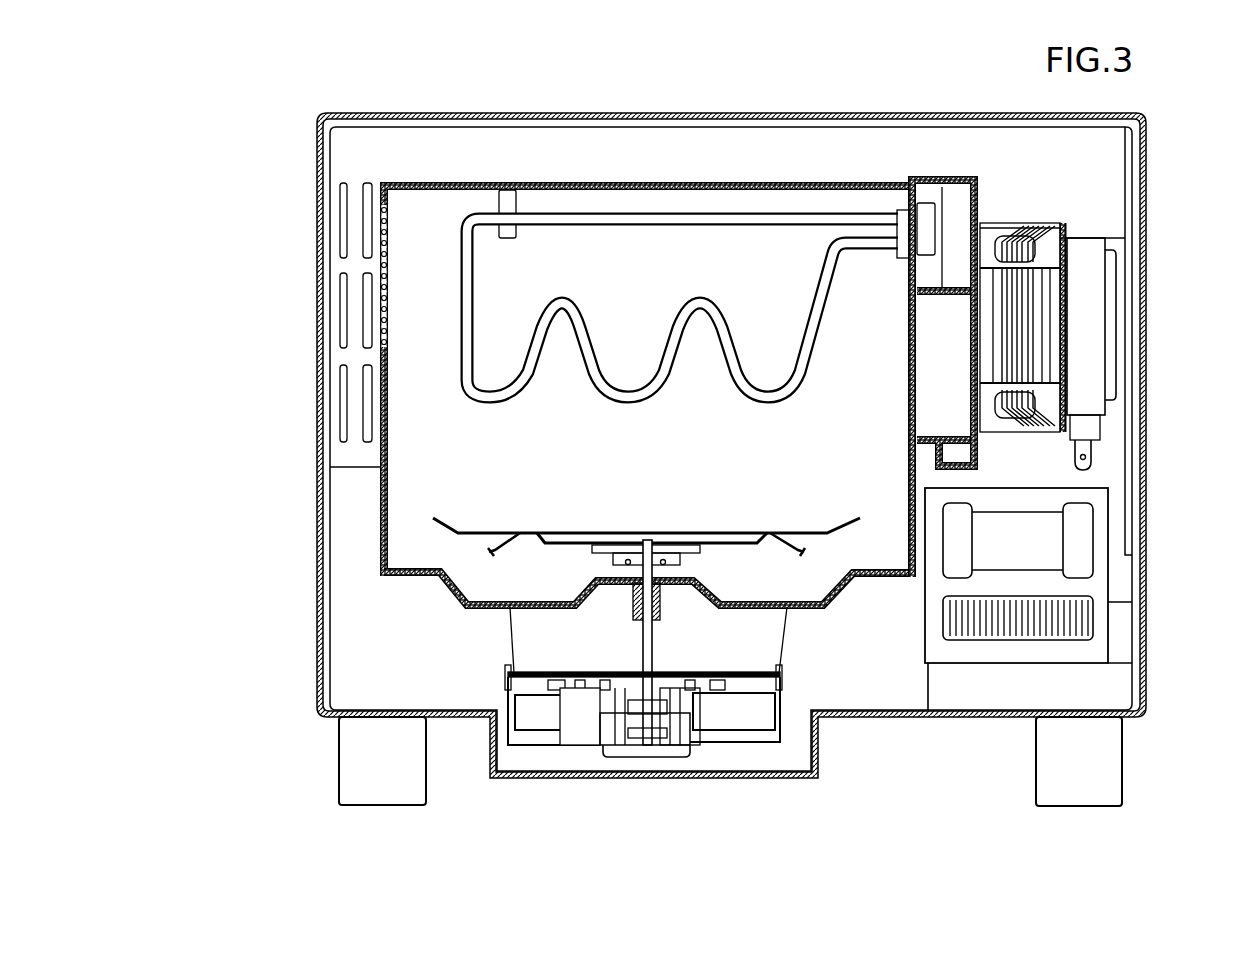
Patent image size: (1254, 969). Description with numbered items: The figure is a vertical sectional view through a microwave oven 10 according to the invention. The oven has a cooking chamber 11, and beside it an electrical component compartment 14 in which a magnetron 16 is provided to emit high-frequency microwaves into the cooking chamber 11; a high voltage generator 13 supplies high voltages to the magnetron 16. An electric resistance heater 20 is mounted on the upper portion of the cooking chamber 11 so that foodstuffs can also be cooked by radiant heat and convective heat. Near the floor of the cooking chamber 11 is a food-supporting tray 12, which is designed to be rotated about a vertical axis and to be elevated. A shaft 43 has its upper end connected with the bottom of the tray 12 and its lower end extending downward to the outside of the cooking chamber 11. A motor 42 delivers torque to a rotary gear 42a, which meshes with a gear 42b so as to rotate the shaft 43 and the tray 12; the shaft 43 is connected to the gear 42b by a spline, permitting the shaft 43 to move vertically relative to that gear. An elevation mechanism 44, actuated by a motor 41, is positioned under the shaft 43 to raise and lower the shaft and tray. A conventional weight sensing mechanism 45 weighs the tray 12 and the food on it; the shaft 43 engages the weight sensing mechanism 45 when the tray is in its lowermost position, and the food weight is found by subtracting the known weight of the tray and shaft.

The microwave oven casing 10 is at (461, 104).
The cooking chamber 11 is at (431, 418).
The food-supporting tray 12 is at (484, 557).
The high voltage generator 13 is at (1100, 590).
The electrical component compartment 14 is at (1109, 469).
The magnetron 16 is at (1110, 342).
The electric resistance heater 20 is at (810, 222).
The motor 41 is at (770, 722).
The motor 42 is at (540, 716).
The rotary gear 42a is at (556, 725).
The gear 42b is at (700, 690).
The shaft 43 is at (662, 714).
The elevation mechanism 44 is at (618, 722).
The weight sensing mechanism 45 is at (655, 722).